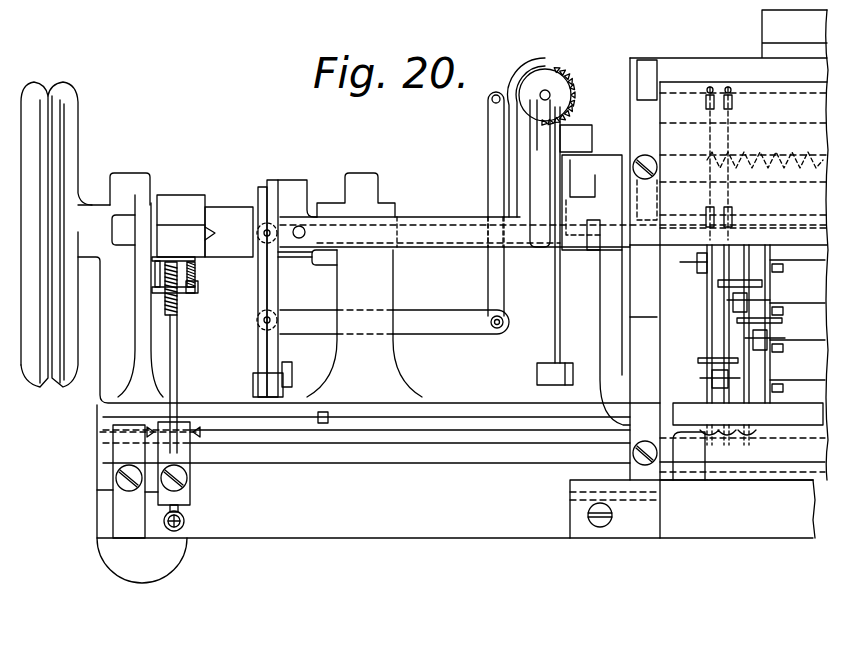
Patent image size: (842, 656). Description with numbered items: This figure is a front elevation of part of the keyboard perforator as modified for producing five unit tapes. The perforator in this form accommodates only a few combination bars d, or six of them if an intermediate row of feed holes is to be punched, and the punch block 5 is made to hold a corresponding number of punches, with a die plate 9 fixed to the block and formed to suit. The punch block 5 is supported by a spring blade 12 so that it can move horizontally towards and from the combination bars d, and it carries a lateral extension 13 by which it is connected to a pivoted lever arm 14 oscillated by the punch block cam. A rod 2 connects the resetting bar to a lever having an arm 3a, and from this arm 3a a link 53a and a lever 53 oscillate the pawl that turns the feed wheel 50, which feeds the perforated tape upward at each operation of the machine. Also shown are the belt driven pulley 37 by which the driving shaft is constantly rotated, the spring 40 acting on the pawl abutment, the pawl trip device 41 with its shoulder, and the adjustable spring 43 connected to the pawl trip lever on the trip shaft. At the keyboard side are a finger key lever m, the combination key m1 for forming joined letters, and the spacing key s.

The belt driven pulley 37 is at (60, 123).
The pivoted lever arm 14 is at (287, 188).
The lateral extension 13 is at (417, 221).
The arm 3a is at (424, 315).
The lever 53 is at (496, 90).
The link 53a is at (490, 125).
The feed wheel 50 is at (563, 84).
The die plate 9 is at (509, 168).
The punch block 5 is at (591, 187).
The rod 2 is at (576, 236).
The spring blade 12 is at (561, 312).
The spring 40 is at (197, 284).
The adjustable spring 43 is at (182, 309).
The pawl trip device 41 is at (176, 357).
The combination bars d is at (729, 245).
The finger key lever m is at (737, 318).
The combination key m1 is at (705, 358).
The spacing key s is at (748, 424).